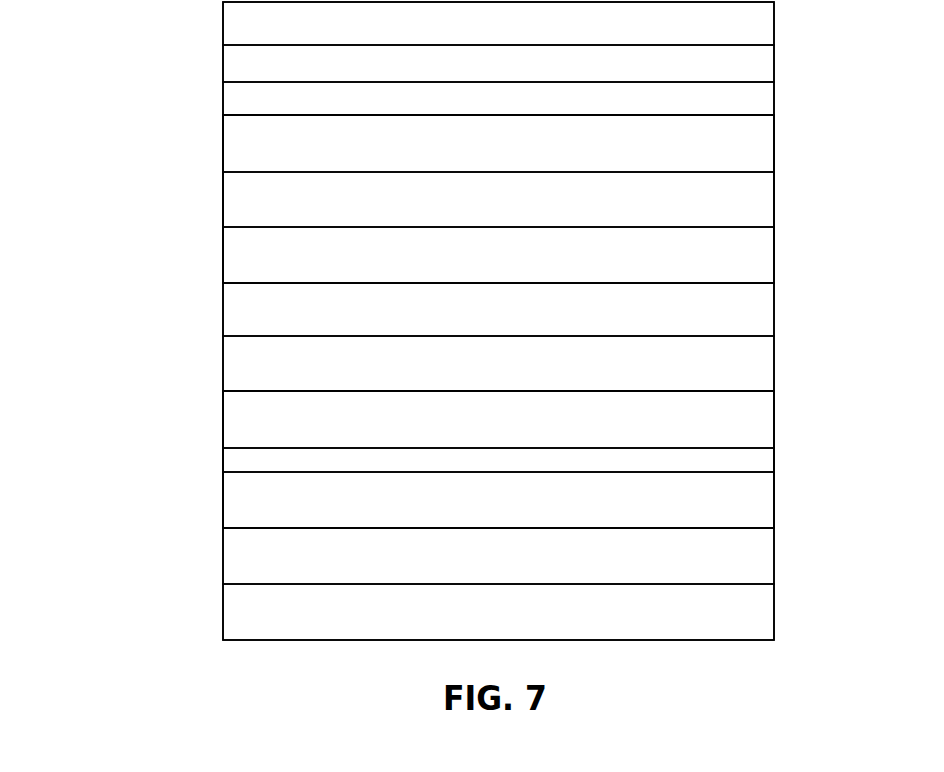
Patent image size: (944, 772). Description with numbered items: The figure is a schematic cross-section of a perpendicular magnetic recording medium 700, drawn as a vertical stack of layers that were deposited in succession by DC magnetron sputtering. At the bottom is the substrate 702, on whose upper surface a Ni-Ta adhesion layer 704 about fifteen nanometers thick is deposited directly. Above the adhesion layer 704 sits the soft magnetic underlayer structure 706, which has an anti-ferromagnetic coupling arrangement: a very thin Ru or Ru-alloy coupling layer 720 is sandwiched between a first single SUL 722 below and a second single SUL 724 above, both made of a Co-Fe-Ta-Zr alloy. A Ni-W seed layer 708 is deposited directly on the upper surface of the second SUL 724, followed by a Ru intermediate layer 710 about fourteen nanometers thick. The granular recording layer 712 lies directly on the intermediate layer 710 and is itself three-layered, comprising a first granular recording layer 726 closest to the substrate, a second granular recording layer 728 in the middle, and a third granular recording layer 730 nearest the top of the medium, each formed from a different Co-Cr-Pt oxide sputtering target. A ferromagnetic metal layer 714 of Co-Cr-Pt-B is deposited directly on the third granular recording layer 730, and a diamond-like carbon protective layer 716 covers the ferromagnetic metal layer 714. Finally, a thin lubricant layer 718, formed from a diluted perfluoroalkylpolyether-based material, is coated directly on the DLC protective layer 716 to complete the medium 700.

The perpendicular magnetic recording medium 700 is at (158, 123).
The substrate 702 is at (520, 622).
The adhesion layer 704 is at (520, 566).
The soft magnetic underlayer structure 706 is at (781, 391).
The seed layer 708 is at (520, 374).
The intermediate layer 710 is at (520, 320).
The granular recording layer 712 is at (781, 114).
The ferromagnetic metal layer 714 is at (520, 110).
The diamond-like carbon protective layer 716 is at (520, 74).
The lubricant layer 718 is at (520, 34).
The coupling layer 720 is at (232, 464).
The first single soft magnetic underlayer 722 is at (520, 510).
The second single soft magnetic underlayer 724 is at (520, 430).
The first granular recording layer 726 is at (520, 265).
The second granular recording layer 728 is at (520, 210).
The third granular recording layer 730 is at (520, 154).